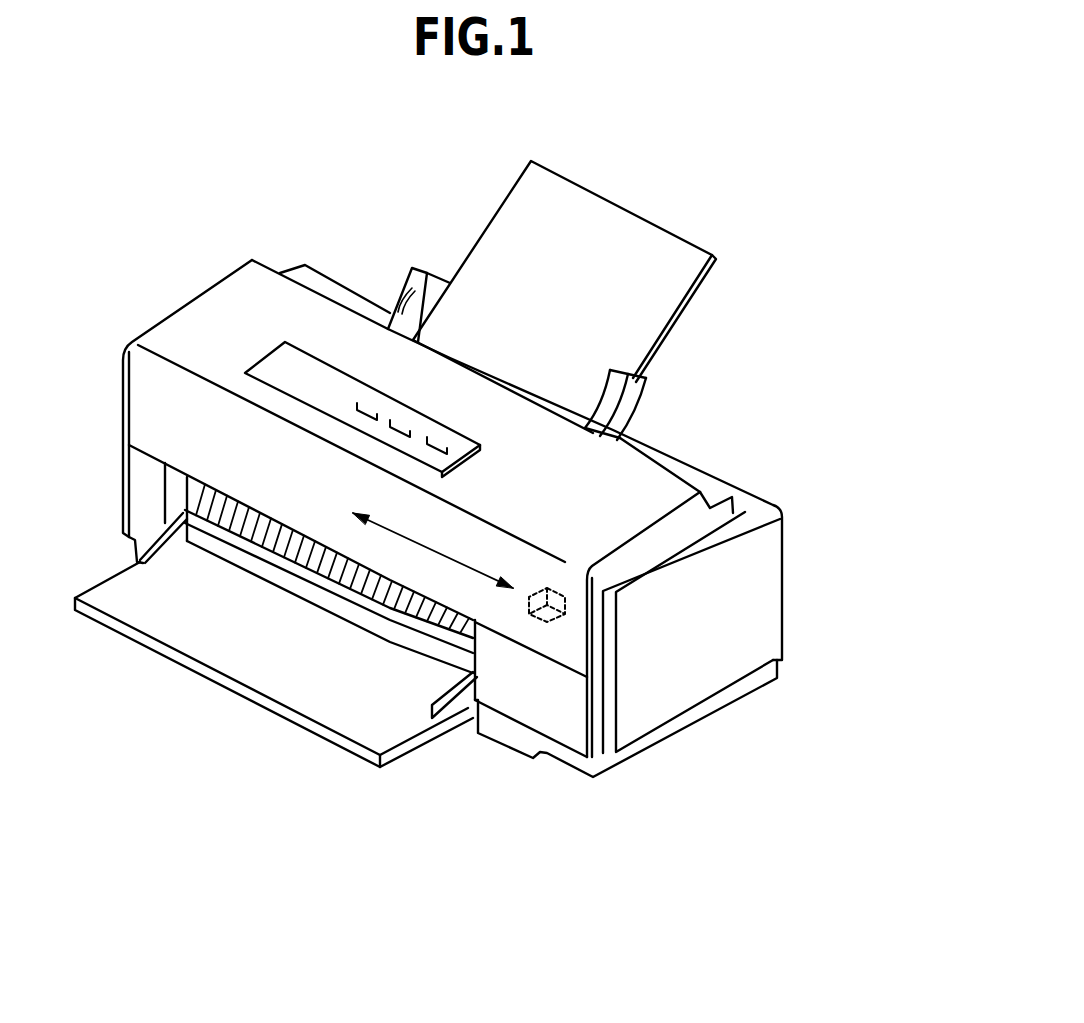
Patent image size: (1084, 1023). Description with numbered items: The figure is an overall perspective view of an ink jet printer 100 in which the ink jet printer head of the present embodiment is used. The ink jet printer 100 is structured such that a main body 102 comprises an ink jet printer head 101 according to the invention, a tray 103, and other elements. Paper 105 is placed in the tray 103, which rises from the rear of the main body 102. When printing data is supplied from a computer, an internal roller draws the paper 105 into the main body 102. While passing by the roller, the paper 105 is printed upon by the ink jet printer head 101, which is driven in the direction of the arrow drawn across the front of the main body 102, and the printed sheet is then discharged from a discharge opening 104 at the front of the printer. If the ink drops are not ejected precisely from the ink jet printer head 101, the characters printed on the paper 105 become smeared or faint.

The ink jet printer 100 is at (222, 932).
The ink jet printer head 101 is at (484, 748).
The main body 102 is at (720, 655).
The tray 103 is at (627, 403).
The discharge opening 104 is at (198, 493).
The paper 105 is at (643, 243).